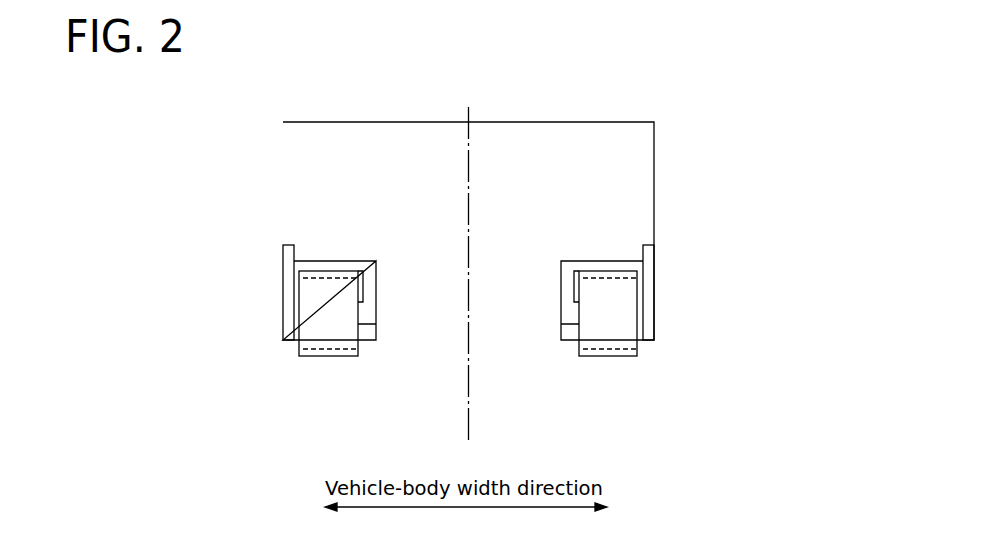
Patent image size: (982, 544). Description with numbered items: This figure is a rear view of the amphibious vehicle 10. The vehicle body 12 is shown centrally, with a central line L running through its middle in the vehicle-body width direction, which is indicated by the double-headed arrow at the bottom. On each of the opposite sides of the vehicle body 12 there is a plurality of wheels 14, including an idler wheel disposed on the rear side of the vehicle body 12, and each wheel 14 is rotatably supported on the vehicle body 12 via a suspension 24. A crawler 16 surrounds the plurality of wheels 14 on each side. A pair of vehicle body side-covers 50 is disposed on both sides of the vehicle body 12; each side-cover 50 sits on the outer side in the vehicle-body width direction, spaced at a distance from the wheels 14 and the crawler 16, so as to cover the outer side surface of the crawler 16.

The amphibious vehicle 10 is at (451, 36).
The vehicle body 12 is at (515, 122).
The wheels 14 is at (340, 353).
The crawler 16 is at (310, 357).
The suspension 24 is at (367, 313).
The vehicle body side-cover 50 is at (283, 278).
The central line L is at (469, 386).